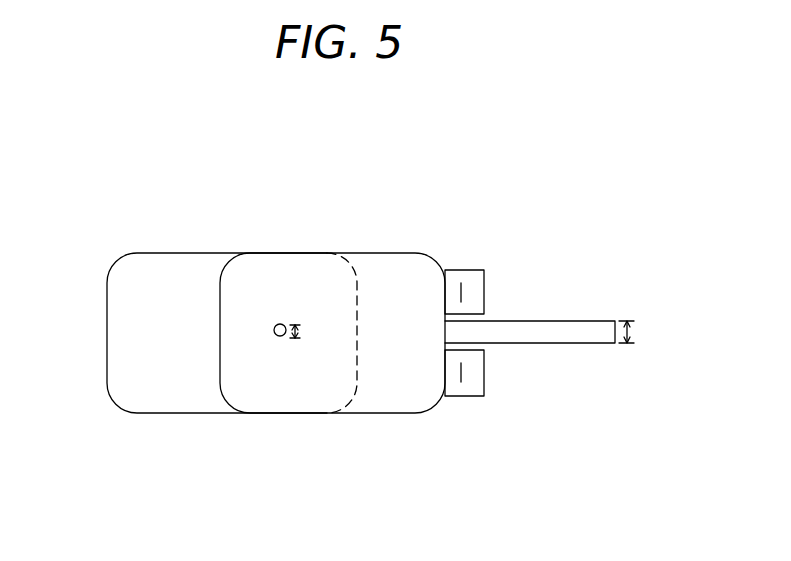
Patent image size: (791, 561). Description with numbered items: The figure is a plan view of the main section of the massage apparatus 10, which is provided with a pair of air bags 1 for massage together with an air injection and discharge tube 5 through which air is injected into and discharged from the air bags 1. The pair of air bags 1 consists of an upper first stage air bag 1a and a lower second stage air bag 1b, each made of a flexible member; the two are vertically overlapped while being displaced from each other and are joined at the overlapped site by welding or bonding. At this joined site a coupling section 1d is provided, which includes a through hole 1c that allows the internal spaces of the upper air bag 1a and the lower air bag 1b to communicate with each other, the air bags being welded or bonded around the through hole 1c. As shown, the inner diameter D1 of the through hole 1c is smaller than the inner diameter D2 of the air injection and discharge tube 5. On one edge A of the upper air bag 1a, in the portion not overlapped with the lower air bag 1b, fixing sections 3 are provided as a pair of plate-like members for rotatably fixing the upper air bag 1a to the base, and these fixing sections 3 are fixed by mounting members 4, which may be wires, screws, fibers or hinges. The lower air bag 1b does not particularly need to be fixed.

The massage apparatus 10 is at (337, 149).
The air bags 1 is at (343, 431).
The first air bag 1a is at (370, 387).
The second air bag 1b is at (185, 325).
The through hole 1c is at (275, 336).
The coupling section 1d is at (290, 295).
The fixing sections 3 is at (484, 310).
The mounting members 4 is at (462, 287).
The air injection and discharge tube 5 is at (562, 333).
The edge A is at (445, 300).
The inner diameter of the through hole D1 is at (318, 335).
The inner diameter of the air injection and discharge tube D2 is at (654, 335).